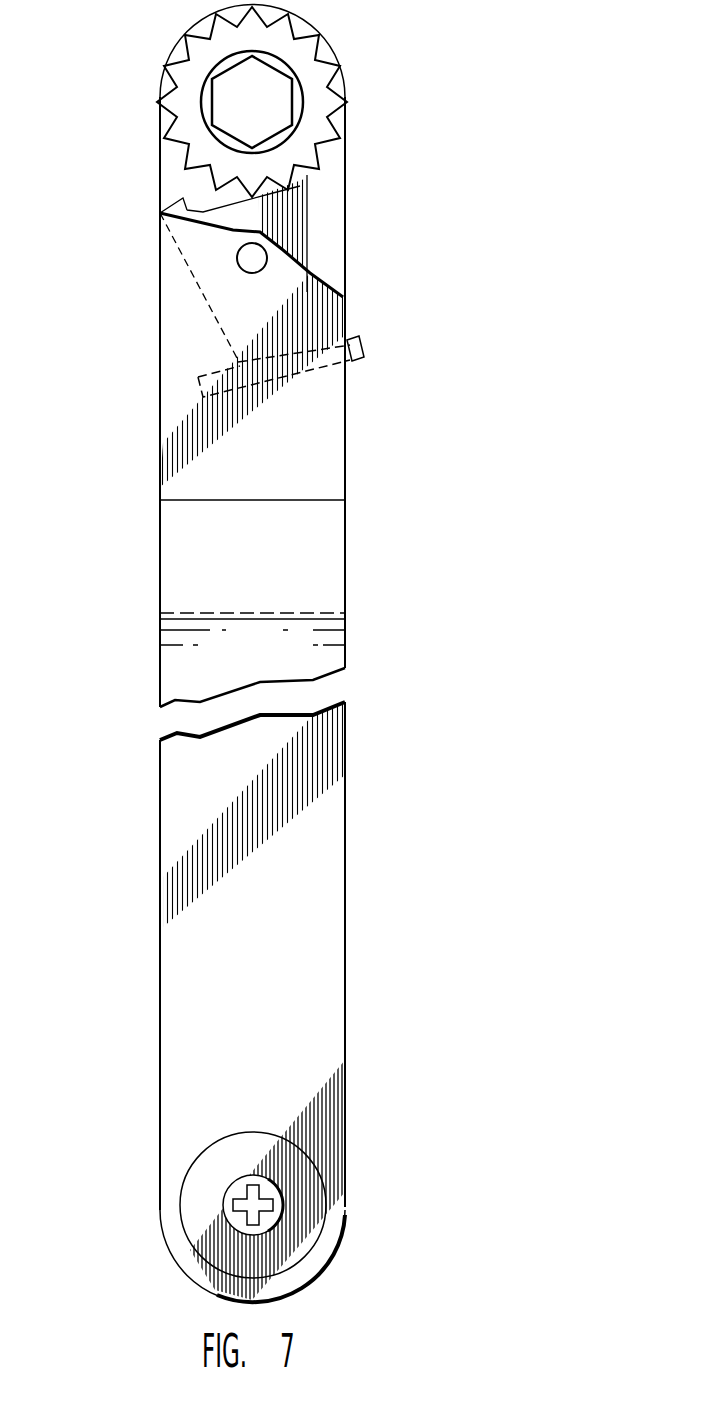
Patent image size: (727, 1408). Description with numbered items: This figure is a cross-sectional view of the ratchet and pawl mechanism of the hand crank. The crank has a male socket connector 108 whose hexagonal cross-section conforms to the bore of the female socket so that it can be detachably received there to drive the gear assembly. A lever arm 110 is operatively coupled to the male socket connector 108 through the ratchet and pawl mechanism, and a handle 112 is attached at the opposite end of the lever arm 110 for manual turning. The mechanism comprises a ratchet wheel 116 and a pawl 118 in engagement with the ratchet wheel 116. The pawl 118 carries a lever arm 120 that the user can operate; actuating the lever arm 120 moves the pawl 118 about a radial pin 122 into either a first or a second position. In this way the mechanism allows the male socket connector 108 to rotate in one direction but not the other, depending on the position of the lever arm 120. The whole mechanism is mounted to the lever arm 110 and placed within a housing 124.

The male socket connector 108 is at (275, 98).
The lever arm 110 is at (313, 863).
The handle 112 is at (327, 1213).
The ratchet wheel 116 is at (287, 20).
The pawl 118 is at (297, 193).
The lever arm 120 is at (357, 350).
The radial pin 122 is at (258, 268).
The housing 124 is at (173, 392).